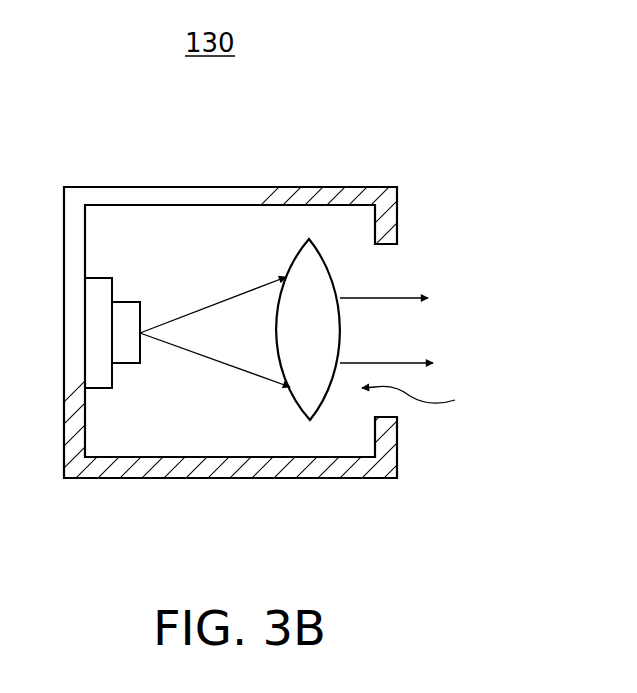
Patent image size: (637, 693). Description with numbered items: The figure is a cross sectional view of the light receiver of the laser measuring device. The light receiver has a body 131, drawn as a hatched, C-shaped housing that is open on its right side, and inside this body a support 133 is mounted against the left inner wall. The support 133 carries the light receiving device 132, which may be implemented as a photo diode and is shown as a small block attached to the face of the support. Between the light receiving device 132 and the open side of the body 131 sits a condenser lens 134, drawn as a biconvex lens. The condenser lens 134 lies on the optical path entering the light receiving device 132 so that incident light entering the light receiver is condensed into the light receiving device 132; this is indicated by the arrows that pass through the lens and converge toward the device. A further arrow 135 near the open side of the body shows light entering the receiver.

The body 131 is at (152, 187).
The light receiving device 132 is at (142, 303).
The support 133 is at (100, 278).
The condenser lens 134 is at (328, 263).
The emitted light 135 is at (434, 398).